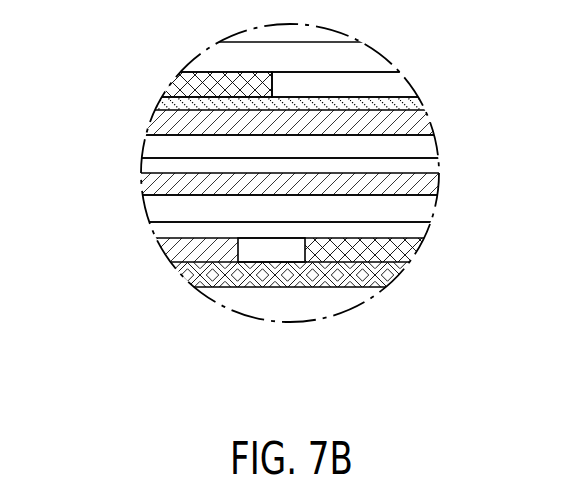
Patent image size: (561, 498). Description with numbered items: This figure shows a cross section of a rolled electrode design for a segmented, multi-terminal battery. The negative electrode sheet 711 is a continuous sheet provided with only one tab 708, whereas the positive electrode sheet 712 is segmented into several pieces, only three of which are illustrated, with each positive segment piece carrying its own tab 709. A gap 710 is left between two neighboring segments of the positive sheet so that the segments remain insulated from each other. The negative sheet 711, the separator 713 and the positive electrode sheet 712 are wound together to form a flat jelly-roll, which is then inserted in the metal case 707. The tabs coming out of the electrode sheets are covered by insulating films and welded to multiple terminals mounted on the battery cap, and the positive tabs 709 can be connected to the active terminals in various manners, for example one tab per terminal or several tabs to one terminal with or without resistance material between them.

The metal case 707 is at (230, 280).
The tab 708 is at (192, 80).
The tab 709 is at (370, 248).
The gap 710 is at (283, 248).
The negative electrode sheet 711 is at (393, 87).
The positive electrode sheet 712 is at (158, 128).
The separator 713 is at (160, 107).